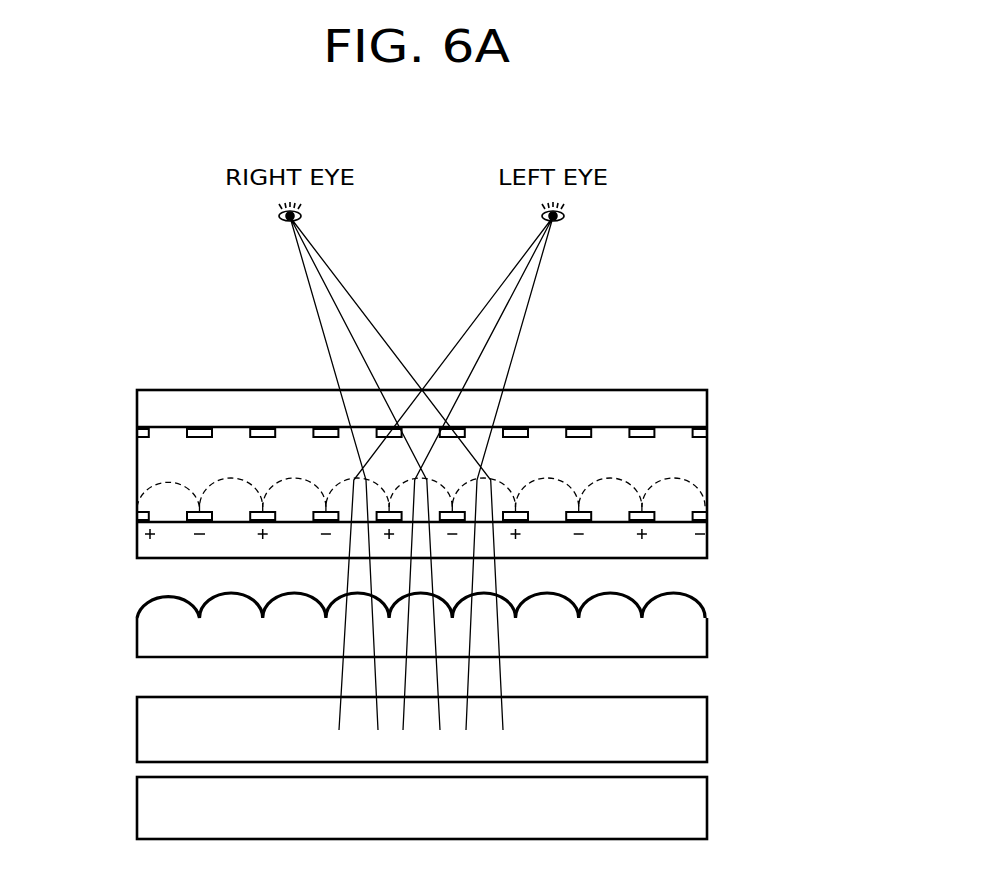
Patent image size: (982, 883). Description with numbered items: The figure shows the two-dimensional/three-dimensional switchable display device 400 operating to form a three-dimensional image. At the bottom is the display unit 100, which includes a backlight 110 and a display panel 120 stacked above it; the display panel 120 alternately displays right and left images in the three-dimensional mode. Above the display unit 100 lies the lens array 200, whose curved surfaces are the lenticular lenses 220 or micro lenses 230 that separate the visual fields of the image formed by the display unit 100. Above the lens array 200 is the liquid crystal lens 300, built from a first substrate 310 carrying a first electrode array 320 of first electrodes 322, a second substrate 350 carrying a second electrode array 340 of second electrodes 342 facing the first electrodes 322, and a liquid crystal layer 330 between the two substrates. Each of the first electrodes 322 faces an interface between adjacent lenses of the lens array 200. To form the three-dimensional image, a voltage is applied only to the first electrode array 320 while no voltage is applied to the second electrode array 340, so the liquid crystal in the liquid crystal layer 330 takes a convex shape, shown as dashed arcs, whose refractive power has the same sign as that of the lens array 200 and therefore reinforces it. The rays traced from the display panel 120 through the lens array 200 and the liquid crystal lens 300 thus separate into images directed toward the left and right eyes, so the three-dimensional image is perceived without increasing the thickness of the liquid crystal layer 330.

The 2D-3D switchable display device 400 is at (113, 358).
The liquid crystal lens 300 is at (830, 398).
The second substrate 350 is at (707, 403).
The second electrode array 340 is at (726, 434).
The second electrodes 342 is at (193, 438).
The liquid crystal layer 330 is at (707, 468).
The first electrode array 320 is at (726, 518).
The first electrodes 322 is at (193, 512).
The first substrate 310 is at (707, 540).
The lens array 200 is at (707, 632).
The lenticular lenses 220 is at (677, 603).
The micro lenses 230 is at (421, 605).
The display unit 100 is at (787, 720).
The display panel 120 is at (707, 730).
The backlight 110 is at (707, 810).